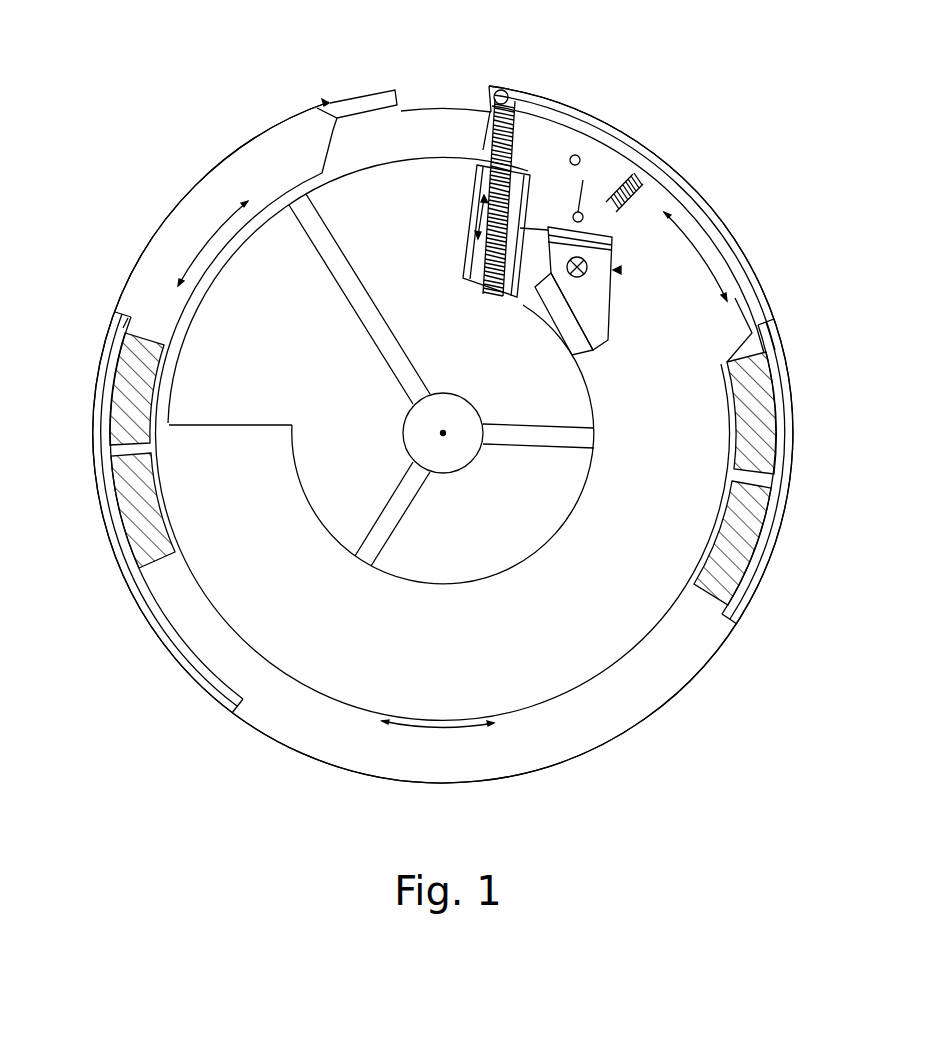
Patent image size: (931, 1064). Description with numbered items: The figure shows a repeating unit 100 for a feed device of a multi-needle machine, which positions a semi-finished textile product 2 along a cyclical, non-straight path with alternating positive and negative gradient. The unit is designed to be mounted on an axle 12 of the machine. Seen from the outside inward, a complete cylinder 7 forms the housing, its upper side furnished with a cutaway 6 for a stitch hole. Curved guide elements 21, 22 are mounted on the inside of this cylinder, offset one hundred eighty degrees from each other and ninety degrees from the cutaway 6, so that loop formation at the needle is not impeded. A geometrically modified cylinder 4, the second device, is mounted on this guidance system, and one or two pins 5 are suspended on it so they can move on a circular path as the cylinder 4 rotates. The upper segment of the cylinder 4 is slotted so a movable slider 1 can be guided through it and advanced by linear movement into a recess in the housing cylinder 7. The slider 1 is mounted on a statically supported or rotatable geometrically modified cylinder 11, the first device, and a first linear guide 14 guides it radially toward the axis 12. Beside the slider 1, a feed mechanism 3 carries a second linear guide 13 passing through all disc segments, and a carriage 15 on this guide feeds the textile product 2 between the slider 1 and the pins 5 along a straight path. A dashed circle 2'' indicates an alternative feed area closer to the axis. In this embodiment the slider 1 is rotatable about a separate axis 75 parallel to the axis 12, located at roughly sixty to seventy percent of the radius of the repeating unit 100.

The repeating unit 100 is at (748, 192).
The slider 1 is at (500, 300).
The semi-finished textile product 2 is at (632, 214).
The dashed circle 2'' is at (616, 155).
The feed mechanism 3 is at (617, 275).
The geometrically modified cylinder 4 is at (637, 647).
The pin 5 is at (621, 270).
The cutaway 6 is at (438, 100).
The complete cylinder 7 is at (575, 760).
The geometrically modified cylinder (first device) 11 is at (177, 350).
The axle (rotary axis) 12 is at (456, 460).
The second linear guide 13 is at (602, 347).
The first linear guide 14 is at (463, 263).
The carriage 15 is at (573, 214).
The curved guide element 21 is at (768, 415).
The curved guide element 22 is at (118, 386).
The rotary axis 75 is at (520, 228).